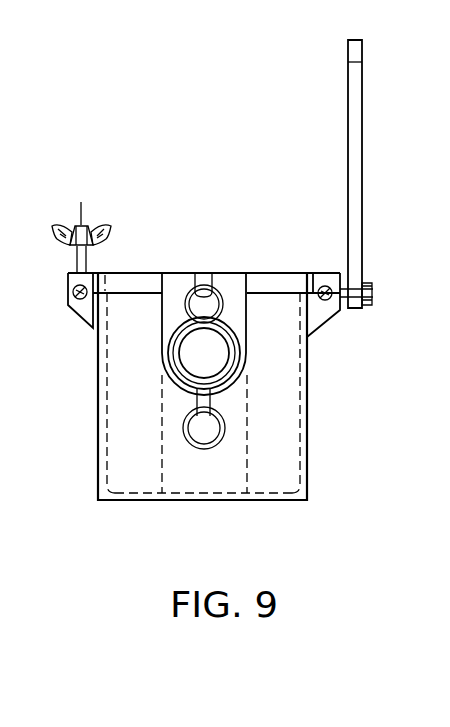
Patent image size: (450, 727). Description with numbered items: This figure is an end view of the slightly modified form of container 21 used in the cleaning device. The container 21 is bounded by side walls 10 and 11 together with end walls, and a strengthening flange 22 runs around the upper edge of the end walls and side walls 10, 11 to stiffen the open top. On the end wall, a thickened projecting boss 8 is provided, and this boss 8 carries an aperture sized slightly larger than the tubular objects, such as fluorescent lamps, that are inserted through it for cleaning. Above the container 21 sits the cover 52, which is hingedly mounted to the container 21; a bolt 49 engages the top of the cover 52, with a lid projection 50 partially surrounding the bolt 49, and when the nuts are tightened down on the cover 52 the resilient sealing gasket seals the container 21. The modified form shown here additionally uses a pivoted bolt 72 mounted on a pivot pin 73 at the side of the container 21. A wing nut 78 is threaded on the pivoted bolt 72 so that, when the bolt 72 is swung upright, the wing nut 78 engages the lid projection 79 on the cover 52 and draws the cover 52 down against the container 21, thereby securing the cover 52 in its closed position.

The projecting boss 8 is at (206, 285).
The side wall 10 is at (308, 398).
The side wall 11 is at (98, 468).
The container 21 is at (98, 397).
The strengthening flange 22 is at (265, 284).
The bolt 49 is at (340, 300).
The lid projection 50 is at (364, 303).
The cover 52 is at (360, 237).
The pivoted bolt 72 is at (77, 256).
The pivot pin 73 is at (73, 297).
The wing nut 78 is at (106, 231).
The lid projection 79 is at (352, 52).